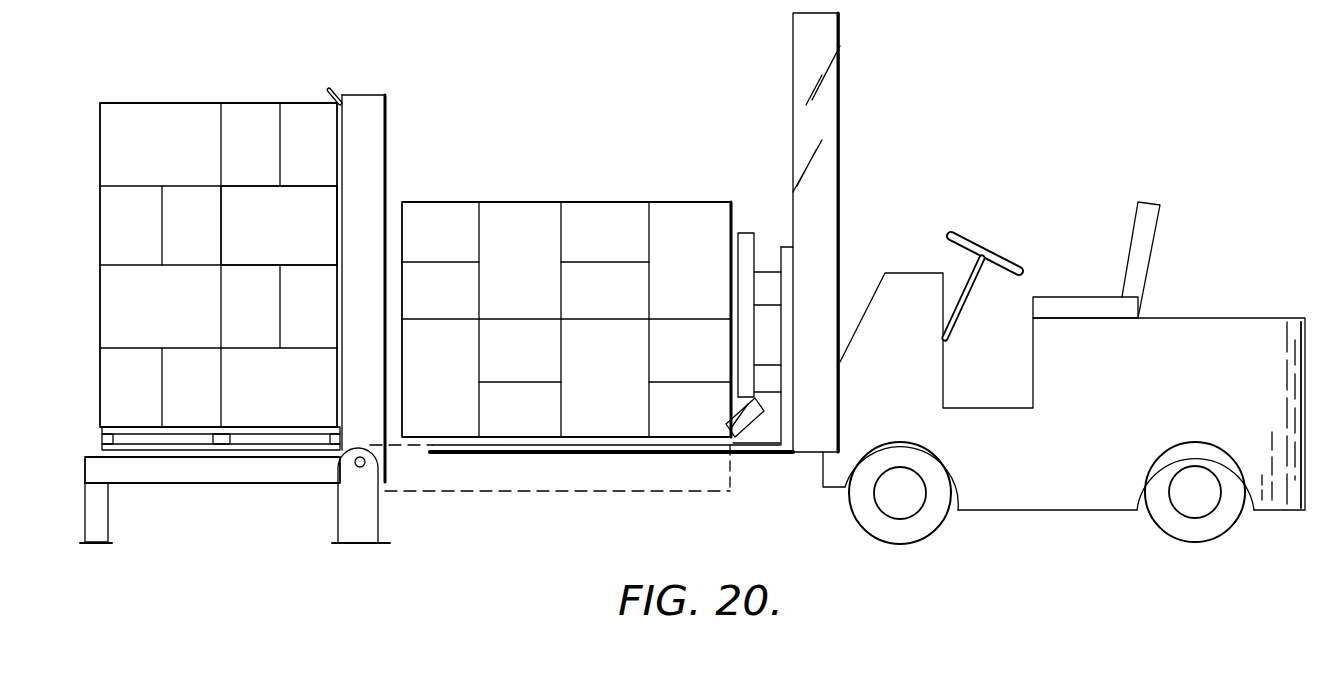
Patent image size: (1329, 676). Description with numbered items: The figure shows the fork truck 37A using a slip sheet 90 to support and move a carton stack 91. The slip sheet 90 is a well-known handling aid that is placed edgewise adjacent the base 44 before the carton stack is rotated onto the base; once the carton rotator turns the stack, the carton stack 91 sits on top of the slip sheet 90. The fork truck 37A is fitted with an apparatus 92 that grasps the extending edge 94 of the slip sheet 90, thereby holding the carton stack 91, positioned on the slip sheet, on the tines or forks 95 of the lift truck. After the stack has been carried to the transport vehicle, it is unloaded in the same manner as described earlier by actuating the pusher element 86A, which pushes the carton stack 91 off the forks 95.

The fork truck 37A is at (1207, 332).
The base 44 is at (372, 101).
The pusher element 86A is at (783, 257).
The slip sheet 90 is at (279, 225).
The carton stack 91 is at (208, 101).
The apparatus 92 is at (758, 432).
The extending edge 94 is at (330, 99).
The tines or forks 95 is at (570, 455).